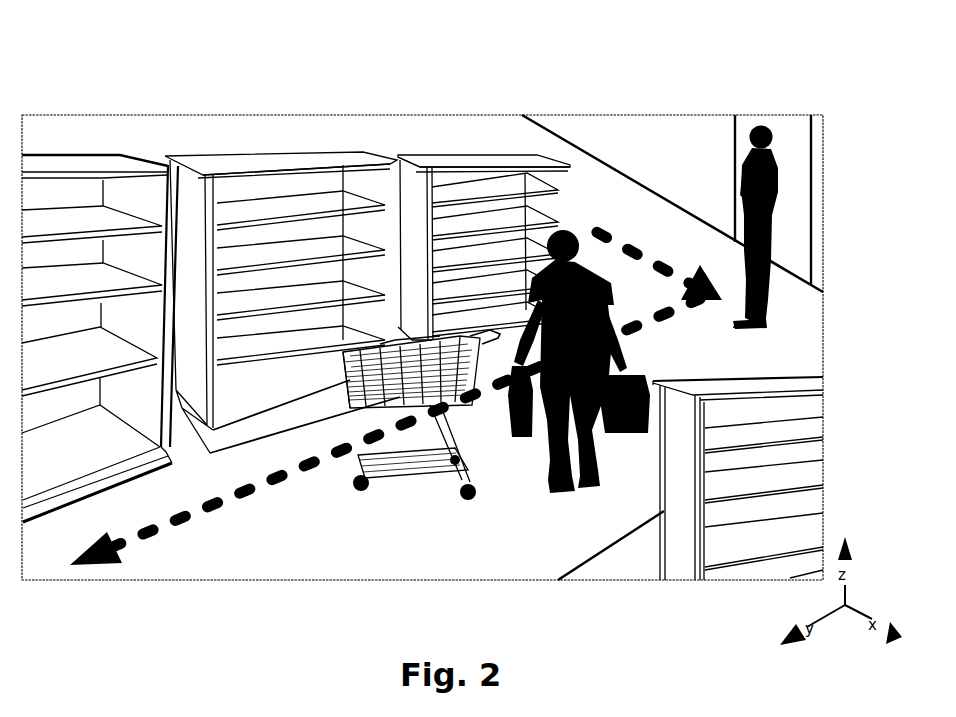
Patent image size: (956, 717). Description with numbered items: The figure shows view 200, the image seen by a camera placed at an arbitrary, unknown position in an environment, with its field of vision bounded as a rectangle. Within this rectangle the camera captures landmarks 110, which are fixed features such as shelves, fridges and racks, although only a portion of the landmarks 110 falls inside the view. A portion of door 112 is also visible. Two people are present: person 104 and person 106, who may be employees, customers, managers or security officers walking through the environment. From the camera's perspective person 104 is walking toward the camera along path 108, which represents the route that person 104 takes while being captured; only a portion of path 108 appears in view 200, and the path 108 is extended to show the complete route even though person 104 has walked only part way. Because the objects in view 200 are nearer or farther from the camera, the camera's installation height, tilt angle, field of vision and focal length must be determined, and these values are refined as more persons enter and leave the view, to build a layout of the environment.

The view 200 is at (422, 298).
The landmarks 110 is at (257, 162).
The door 112 is at (795, 132).
The person 104 is at (578, 233).
The person 106 is at (773, 200).
The path 108 is at (150, 538).